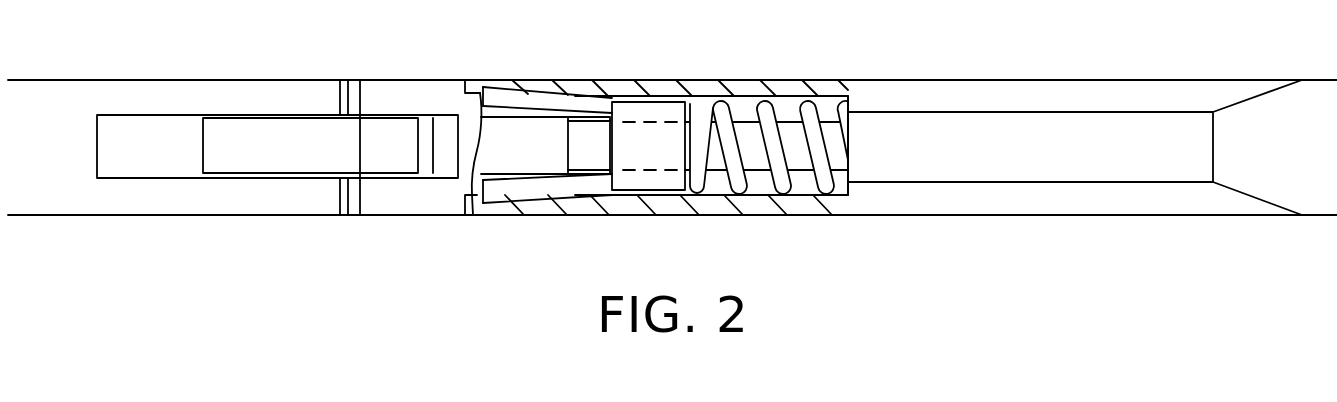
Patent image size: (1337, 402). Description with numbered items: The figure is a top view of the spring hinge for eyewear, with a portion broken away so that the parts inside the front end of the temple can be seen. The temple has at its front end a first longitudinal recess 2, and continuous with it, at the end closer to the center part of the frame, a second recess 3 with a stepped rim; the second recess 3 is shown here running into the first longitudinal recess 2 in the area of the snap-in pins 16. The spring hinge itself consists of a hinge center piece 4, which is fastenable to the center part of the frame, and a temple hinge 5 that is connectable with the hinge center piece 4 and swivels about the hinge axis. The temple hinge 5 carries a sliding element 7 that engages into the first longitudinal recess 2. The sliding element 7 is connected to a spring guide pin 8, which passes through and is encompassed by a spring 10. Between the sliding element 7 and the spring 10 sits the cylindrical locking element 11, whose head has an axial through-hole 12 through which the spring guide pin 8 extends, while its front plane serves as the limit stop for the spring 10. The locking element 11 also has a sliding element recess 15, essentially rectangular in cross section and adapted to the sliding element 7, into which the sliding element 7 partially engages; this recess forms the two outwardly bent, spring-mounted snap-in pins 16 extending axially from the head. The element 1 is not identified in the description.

The outer tube 1 is at (1040, 163).
The first longitudinal recess 2 is at (719, 187).
The second recess 3 is at (547, 95).
The hinge center piece 4 is at (167, 200).
The temple hinge 5 is at (293, 142).
The sliding element 7 is at (505, 145).
The spring guide pin 8 is at (802, 155).
The spring 10 is at (767, 113).
The locking element 11 is at (643, 103).
The through-hole 12 is at (650, 142).
The sliding element recess 15 is at (595, 173).
The snap-in pins 16 is at (498, 97).